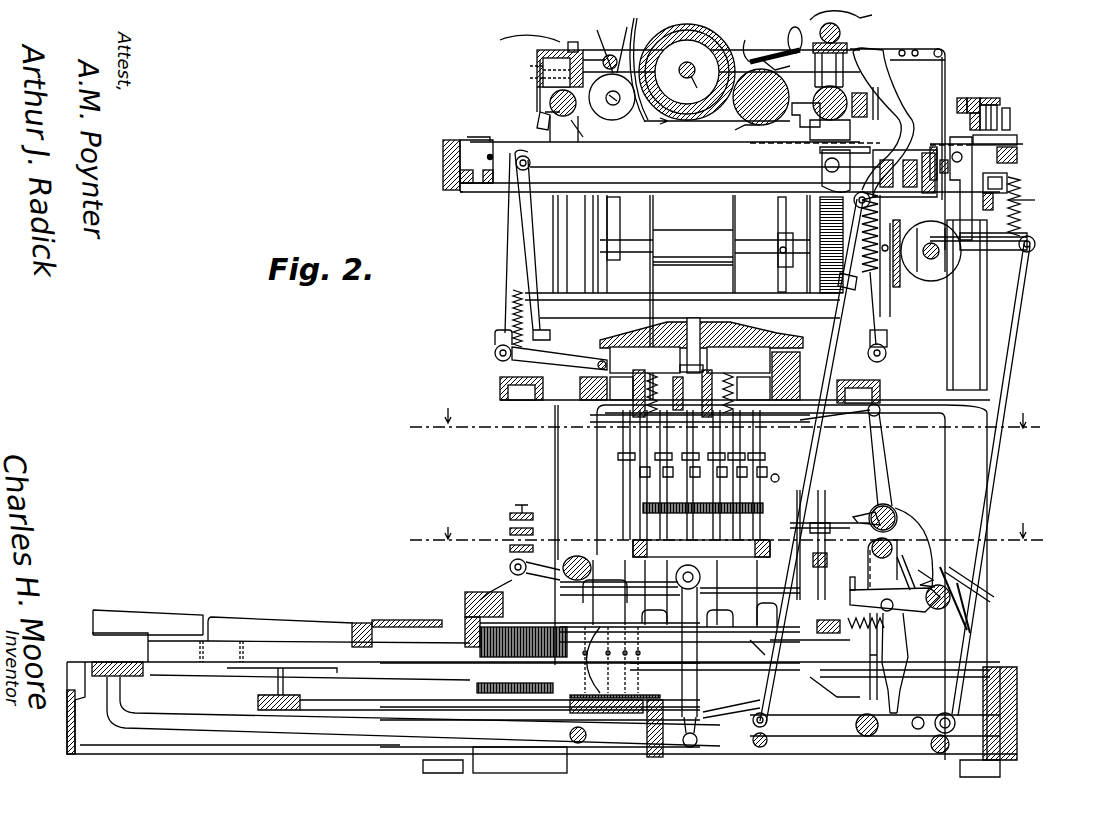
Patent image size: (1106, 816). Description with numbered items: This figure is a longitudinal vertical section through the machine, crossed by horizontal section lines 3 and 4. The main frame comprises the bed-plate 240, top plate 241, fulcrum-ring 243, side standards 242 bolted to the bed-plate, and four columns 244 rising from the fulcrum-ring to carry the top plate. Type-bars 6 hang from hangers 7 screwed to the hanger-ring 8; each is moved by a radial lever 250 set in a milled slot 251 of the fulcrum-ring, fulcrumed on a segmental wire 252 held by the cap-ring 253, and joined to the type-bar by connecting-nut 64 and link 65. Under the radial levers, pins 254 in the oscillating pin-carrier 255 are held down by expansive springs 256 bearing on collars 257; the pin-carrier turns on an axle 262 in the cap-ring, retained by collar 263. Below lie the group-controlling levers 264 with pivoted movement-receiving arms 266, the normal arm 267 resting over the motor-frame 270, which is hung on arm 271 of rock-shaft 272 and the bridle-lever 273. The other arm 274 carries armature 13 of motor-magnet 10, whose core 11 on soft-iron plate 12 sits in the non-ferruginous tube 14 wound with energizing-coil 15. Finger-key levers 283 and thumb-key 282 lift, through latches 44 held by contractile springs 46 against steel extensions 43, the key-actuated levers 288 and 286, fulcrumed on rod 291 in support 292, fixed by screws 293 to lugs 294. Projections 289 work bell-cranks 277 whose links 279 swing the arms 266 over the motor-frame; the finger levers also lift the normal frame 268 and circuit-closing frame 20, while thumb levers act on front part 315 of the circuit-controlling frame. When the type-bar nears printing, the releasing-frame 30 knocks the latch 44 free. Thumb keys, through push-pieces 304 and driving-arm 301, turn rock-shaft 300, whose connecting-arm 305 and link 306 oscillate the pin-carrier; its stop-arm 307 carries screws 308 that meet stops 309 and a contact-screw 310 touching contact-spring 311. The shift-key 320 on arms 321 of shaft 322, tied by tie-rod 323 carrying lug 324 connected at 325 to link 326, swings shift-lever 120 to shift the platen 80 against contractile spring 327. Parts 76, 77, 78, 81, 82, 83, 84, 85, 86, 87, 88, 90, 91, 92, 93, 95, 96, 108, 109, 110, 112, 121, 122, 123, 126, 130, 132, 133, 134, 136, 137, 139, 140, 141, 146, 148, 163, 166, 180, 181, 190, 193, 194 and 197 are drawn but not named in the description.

The section line 3 is at (724, 426).
The section line 4 is at (730, 539).
The type-bar 6 is at (530, 252).
The hanger 7 is at (455, 142).
The hanger-ring 8 is at (580, 182).
The motor-magnet 10 is at (470, 657).
The core 11 is at (540, 757).
The soft-iron plate 12 is at (567, 770).
The armature 13 is at (520, 583).
The non-ferruginous tube 14 is at (523, 642).
The energizing-coil 15 is at (515, 680).
The circuit-closing frame 20 is at (990, 620).
The releasing-frame 30 is at (870, 572).
The steel extension 43 is at (865, 678).
The latch 44 is at (905, 632).
The contractile spring 46 is at (862, 630).
The connecting-nut 64 is at (495, 338).
The link 65 is at (506, 238).
The hub screw 76 is at (609, 92).
The shaft 77 is at (666, 122).
The hook 78 is at (640, 35).
The platen 80 is at (712, 27).
The hub 81 is at (685, 83).
The screw 82 is at (570, 45).
The cylinder 83 is at (820, 28).
The arm 84 is at (862, 47).
The roller 85 is at (830, 118).
The block 86 is at (805, 128).
The band 87 is at (898, 112).
The shaft 88 is at (748, 128).
The lever 90 is at (748, 38).
The lever 91 is at (774, 50).
The roller 92 is at (693, 132).
The wheel 93 is at (606, 112).
The spring 95 is at (600, 32).
The bracket 96 is at (540, 95).
The solenoid 108 is at (540, 63).
The core 109 is at (530, 72).
The roller 110 is at (560, 116).
The support 112 is at (578, 142).
The shift-lever 120 is at (898, 82).
The pivot 121 is at (826, 167).
The plate edge 122 is at (948, 90).
The hole 123 is at (942, 51).
The holes 126 is at (905, 50).
The block 130 is at (905, 169).
The block 132 is at (1010, 180).
The plate 133 is at (950, 140).
The bar 134 is at (982, 138).
The spring 136 is at (1025, 200).
The pin 137 is at (1025, 212).
The block 139 is at (985, 103).
The pin 140 is at (1010, 118).
The block 141 is at (995, 200).
The lever 146 is at (1005, 243).
The pivot 148 is at (1022, 252).
The bar 163 is at (790, 214).
The rack 166 is at (818, 275).
The block 180 is at (713, 225).
The bar 181 is at (748, 255).
The block 190 is at (615, 240).
The plate 193 is at (897, 287).
The wheel 194 is at (931, 251).
The plate 197 is at (969, 305).
The bed-plate 240 is at (80, 735).
The top plate 241 is at (443, 160).
The side standard 242 is at (575, 452).
The fulcrum-ring 243 is at (500, 388).
The column 244 is at (587, 278).
The radial lever 250 is at (500, 357).
The milled slot 251 is at (577, 392).
The segmental wire 252 is at (593, 365).
The cap-ring 253 is at (740, 320).
The pin 254 is at (597, 440).
The pin-carrier 255 is at (717, 386).
The expansive spring 256 is at (753, 389).
The collar 257 is at (622, 389).
The axle 262 is at (688, 322).
The collar 263 is at (703, 486).
The group-controlling lever 264 is at (640, 462).
The movement-receiving arm 266 is at (645, 512).
The normal movement-receiving arm 267 is at (763, 485).
The normal frame 268 is at (611, 660).
The oscillating motor-frame 270 is at (726, 560).
The rock-shaft arm 271 is at (680, 603).
The rock-shaft 272 is at (578, 556).
The bridle-lever 273 is at (616, 726).
The rock-shaft arm 274 is at (510, 560).
The bell-crank 277 is at (702, 580).
The link 279 is at (645, 478).
The thumb-key 282 is at (130, 612).
The finger-key lever 283 is at (235, 620).
The key-actuated lever 286 is at (92, 645).
The key-actuated lever 288 is at (752, 653).
The projection 289 is at (735, 624).
The rod 291 is at (465, 605).
The support 292 is at (440, 668).
The screw 293 is at (392, 618).
The lug 294 is at (450, 685).
The rock-shaft 300 is at (892, 508).
The driving-arm 301 is at (866, 533).
The push-piece 304 is at (825, 507).
The connecting-arm 305 is at (886, 472).
The link 306 is at (820, 440).
The stop-arm 307 is at (919, 546).
The screw 308 is at (916, 572).
The stop 309 is at (900, 610).
The contact-screw 310 is at (959, 588).
The contact-spring 311 is at (985, 583).
The front part 315 is at (836, 605).
The shift-key 320 is at (140, 680).
The arm 321 is at (210, 735).
The shaft 322 is at (957, 749).
The tie-rod 323 is at (770, 722).
The lug 324 is at (770, 742).
The connection 325 is at (730, 712).
The link 326 is at (810, 657).
The contractile spring 327 is at (885, 206).